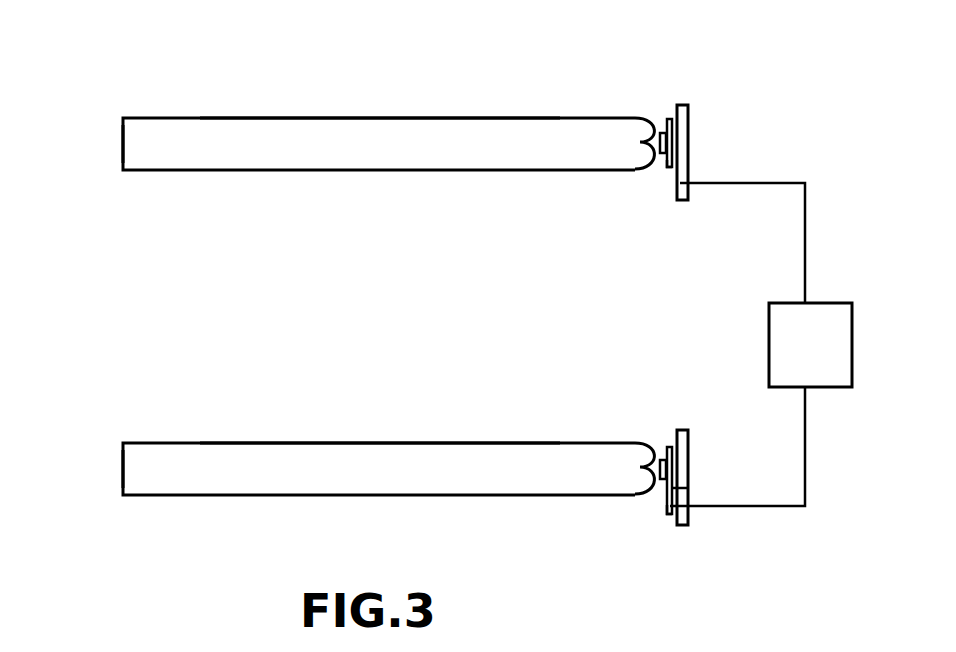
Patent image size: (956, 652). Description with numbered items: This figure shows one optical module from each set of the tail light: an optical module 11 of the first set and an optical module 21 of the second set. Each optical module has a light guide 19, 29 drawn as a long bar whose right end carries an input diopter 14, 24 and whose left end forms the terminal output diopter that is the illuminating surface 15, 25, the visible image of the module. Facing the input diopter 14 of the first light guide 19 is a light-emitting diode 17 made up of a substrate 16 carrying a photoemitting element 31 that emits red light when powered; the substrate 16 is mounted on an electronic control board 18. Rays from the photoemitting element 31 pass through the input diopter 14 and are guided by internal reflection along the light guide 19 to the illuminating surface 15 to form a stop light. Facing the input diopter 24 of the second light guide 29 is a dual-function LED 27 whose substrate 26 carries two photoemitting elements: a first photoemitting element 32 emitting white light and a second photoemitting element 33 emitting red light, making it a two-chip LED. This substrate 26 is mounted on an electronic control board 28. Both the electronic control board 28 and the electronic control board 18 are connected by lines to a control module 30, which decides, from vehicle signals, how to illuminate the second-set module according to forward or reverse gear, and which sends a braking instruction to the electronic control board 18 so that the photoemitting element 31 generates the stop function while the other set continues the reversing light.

The optical module 11 is at (380, 108).
The input diopter 14 is at (645, 147).
The illuminating surface 15 is at (123, 137).
The substrate 16 is at (672, 163).
The light-emitting diode 17 is at (668, 116).
The electronic control board 18 is at (683, 146).
The light guide 19 is at (322, 150).
The optical module 21 is at (380, 436).
The input diopter 24 is at (645, 473).
The illuminating surface 25 is at (123, 464).
The substrate 26 is at (680, 488).
The dual-function LED 27 is at (668, 442).
The electronic control board 28 is at (683, 470).
The light guide 29 is at (322, 474).
The control module 30 is at (780, 322).
The photoemitting element 31 is at (662, 128).
The first photoemitting element 32 is at (661, 455).
The second photoemitting element 33 is at (667, 490).